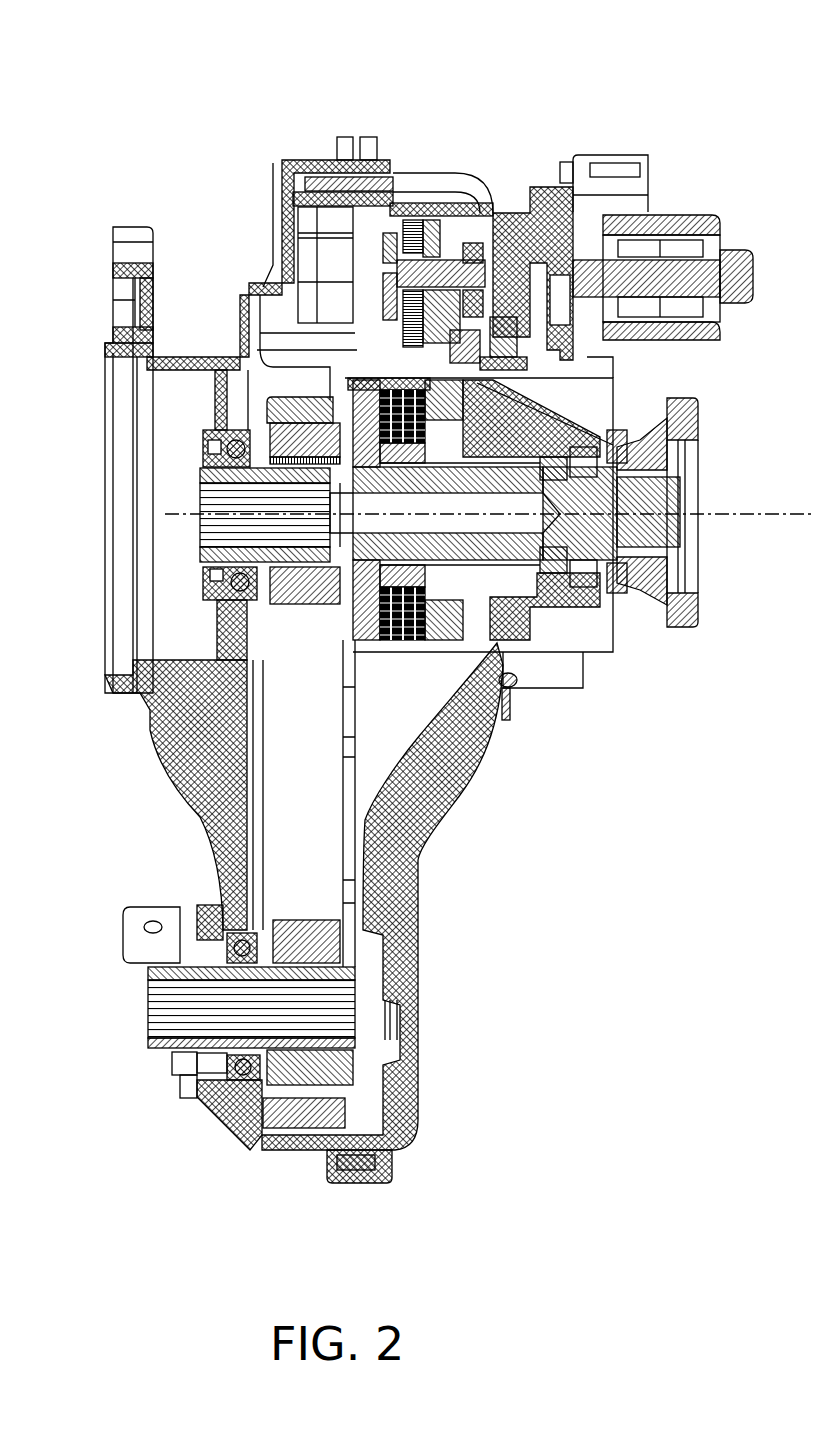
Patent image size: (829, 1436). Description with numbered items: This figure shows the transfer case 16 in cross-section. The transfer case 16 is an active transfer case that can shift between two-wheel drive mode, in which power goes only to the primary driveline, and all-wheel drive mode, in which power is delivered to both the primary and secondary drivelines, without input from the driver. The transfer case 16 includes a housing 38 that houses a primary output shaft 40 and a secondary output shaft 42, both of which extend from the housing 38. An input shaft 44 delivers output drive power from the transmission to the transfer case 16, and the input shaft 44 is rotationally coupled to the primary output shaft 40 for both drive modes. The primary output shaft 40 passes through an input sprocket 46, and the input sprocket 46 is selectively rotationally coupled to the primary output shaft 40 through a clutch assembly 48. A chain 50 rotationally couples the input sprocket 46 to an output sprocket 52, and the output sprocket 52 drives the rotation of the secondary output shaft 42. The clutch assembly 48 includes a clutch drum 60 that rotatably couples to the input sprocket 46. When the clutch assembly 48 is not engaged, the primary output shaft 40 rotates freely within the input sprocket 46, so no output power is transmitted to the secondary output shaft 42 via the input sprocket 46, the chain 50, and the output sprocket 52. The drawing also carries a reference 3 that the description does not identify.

The transfer case 16 is at (630, 70).
The housing 3 is at (617, 405).
The housing 38 is at (200, 793).
The primary output shaft 40 is at (617, 507).
The secondary output shaft 42 is at (158, 985).
The input shaft 44 is at (213, 510).
The input sprocket 46 is at (287, 440).
The clutch assembly 48 is at (393, 672).
The chain 50 is at (280, 400).
The output sprocket 52 is at (310, 1067).
The clutch drum 60 is at (352, 380).